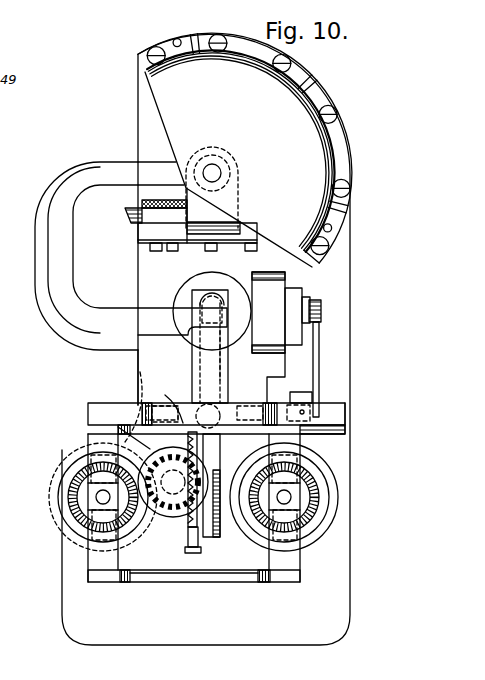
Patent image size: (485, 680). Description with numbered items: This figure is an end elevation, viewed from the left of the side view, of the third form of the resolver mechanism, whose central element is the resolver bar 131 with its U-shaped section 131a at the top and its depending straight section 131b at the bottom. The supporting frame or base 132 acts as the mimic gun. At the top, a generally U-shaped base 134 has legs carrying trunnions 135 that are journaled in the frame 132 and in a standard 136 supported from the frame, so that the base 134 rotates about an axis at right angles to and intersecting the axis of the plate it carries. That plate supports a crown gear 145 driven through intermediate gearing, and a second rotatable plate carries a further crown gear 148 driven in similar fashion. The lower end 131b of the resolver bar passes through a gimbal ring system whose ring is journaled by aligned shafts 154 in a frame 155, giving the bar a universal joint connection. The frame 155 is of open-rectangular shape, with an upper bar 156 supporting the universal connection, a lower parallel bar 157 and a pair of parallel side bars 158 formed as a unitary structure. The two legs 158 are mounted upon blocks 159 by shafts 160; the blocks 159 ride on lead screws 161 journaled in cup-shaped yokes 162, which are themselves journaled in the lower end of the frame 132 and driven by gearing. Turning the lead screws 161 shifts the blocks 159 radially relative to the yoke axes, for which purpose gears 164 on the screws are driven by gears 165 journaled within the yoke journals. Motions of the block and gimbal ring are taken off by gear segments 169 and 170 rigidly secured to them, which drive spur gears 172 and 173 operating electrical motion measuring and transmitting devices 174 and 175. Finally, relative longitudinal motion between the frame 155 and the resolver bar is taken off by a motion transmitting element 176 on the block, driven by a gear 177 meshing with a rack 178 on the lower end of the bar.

The resolver bar 131 is at (63, 166).
The U-shaped section 131a is at (53, 312).
The depending straight section 131b is at (223, 381).
The supporting frame or base 132 is at (135, 384).
The base 134 is at (138, 236).
The trunnions 135 is at (226, 150).
The standard 136 is at (299, 112).
The crown gear 145 is at (127, 210).
The crown gear 148 is at (140, 203).
The aligned shafts 154 is at (170, 405).
The frame 155 is at (176, 583).
The upper bar 156 is at (88, 413).
The lower parallel bar 157 is at (236, 578).
The side bars 158 is at (93, 566).
The blocks 159 is at (103, 510).
The shafts 160 is at (98, 499).
The lead screws 161 is at (72, 500).
The cup-shaped yokes 162 is at (66, 452).
The gears 164 is at (85, 472).
The gears 165 is at (68, 498).
The gear segment 169 is at (190, 351).
The gear segment 170 is at (320, 368).
The spur gear 172 is at (200, 315).
The spur gear 173 is at (312, 300).
The electrical motion measuring and transmitting device 174 is at (180, 292).
The electrical motion measuring and transmitting device 175 is at (255, 285).
The motion transmitting element 176 is at (122, 429).
The gear 177 is at (172, 514).
The rack 178 is at (193, 548).